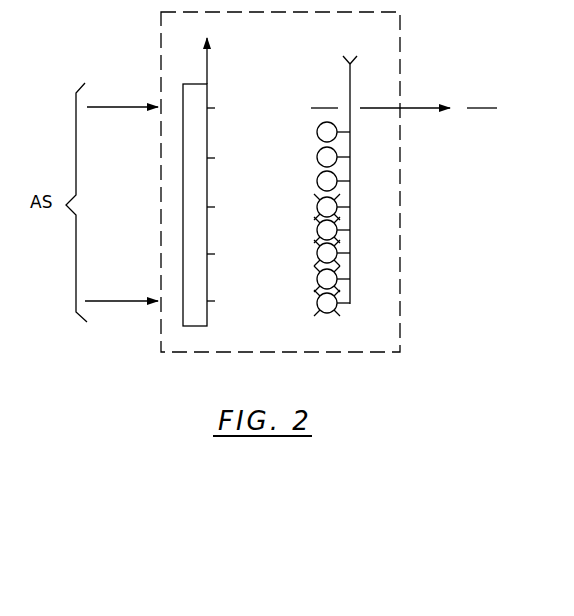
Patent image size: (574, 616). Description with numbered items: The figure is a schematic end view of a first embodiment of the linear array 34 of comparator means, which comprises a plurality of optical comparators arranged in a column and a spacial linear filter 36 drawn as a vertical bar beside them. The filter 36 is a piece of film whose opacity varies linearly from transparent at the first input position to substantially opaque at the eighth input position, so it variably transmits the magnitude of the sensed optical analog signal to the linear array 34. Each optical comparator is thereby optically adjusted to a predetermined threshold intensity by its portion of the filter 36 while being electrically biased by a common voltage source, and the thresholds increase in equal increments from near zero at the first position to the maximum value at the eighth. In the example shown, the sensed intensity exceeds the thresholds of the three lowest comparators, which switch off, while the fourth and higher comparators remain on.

The linear array of optical comparators 34 is at (401, 36).
The spacial linear filter 36 is at (190, 83).